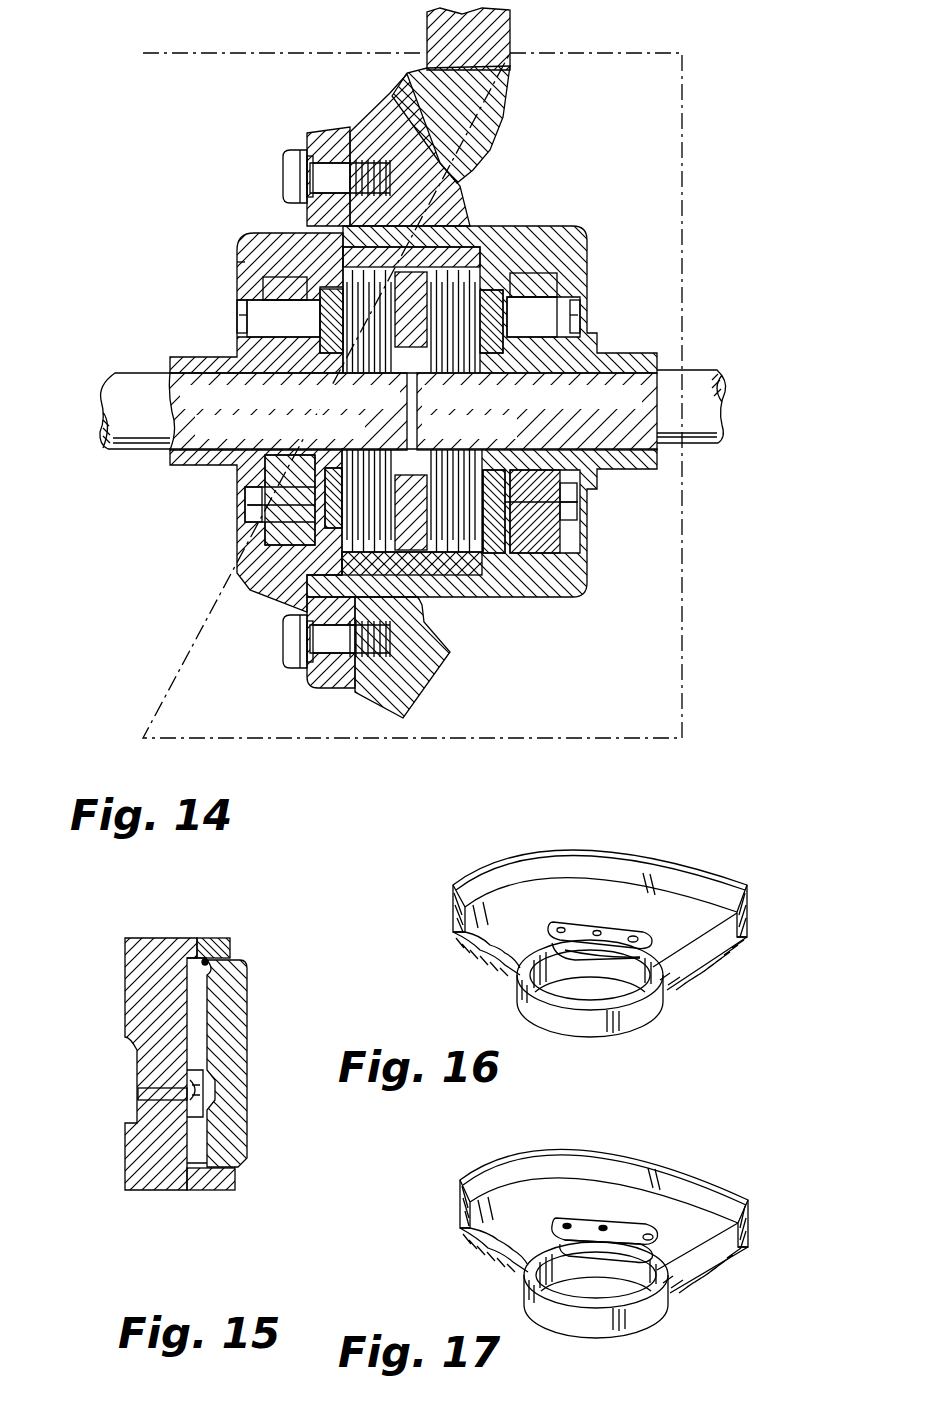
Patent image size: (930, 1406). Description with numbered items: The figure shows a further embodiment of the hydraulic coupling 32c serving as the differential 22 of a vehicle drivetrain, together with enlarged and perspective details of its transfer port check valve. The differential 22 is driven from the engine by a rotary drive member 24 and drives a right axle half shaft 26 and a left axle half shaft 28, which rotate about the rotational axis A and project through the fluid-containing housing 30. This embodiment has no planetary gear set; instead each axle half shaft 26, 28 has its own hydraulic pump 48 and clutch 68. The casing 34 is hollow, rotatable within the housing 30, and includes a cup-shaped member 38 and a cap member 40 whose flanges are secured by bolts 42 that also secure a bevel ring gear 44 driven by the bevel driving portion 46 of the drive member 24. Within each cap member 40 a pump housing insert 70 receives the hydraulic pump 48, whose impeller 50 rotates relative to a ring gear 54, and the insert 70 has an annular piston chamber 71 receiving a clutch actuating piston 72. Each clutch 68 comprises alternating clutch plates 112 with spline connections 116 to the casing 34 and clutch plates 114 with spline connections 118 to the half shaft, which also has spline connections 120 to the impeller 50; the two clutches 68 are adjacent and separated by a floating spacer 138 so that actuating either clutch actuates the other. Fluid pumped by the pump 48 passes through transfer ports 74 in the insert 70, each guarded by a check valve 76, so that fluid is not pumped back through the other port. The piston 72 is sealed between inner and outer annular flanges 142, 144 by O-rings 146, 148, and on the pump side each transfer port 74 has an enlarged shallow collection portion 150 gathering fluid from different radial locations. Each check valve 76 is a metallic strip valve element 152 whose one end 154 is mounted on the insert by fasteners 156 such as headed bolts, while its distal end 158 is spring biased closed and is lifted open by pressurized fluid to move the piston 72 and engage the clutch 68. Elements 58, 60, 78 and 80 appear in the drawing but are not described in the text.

In FIG. 14, the differential 22 is at (138, 70).
In FIG. 14, the rotary drive member 24 is at (428, 36).
In FIG. 14, the right axle half shaft 26 is at (712, 425).
In FIG. 14, the left axle half shaft 28 is at (364, 431).
In FIG. 14, the housing 30 is at (684, 190).
In FIG. 14, the hydraulic coupling 32c is at (244, 588).
In FIG. 14, the casing 34 is at (528, 600).
In FIG. 14, the cup-shaped member 38 is at (565, 600).
In FIG. 14, the cap member 40 is at (413, 391).
In FIG. 14, the bolts 42 is at (292, 160).
In FIG. 14, the ring gear 44 is at (365, 128).
In FIG. 14, the bevel driving portion 46 is at (462, 160).
In FIG. 14, the hydraulic pump 48 is at (265, 288).
In FIG. 14, the pump impeller 50 is at (413, 411).
In FIG. 14, the ring gear 54 is at (242, 255).
In FIG. 14, the snap ring 58 is at (240, 303).
In FIG. 14, the retaining clip 60 is at (243, 330).
In FIG. 14, the clutch 68 is at (480, 602).
In FIG. 14, the pump housing insert 70 is at (315, 268).
In FIG. 15, the pump housing insert 70 is at (167, 936).
In FIG. 16, the pump housing insert 70 is at (478, 860).
In FIG. 17, the pump housing insert 70 is at (507, 1160).
In FIG. 14, the annular piston chamber 71 is at (328, 292).
In FIG. 15, the annular piston chamber 71 is at (197, 988).
In FIG. 14, the clutch actuating piston 72 is at (380, 445).
In FIG. 15, the clutch actuating piston 72 is at (243, 975).
In FIG. 14, the transfer ports 74 is at (318, 318).
In FIG. 15, the transfer ports 74 is at (150, 1094).
In FIG. 16, the transfer ports 74 is at (652, 934).
In FIG. 17, the transfer ports 74 is at (657, 1242).
In FIG. 14, the check valve 76 is at (318, 318).
In FIG. 15, the check valve 76 is at (200, 1078).
In FIG. 16, the check valve 76 is at (633, 918).
In FIG. 17, the check valve 76 is at (615, 1200).
In FIG. 14, the hub flange 78 is at (413, 411).
In FIG. 14, the shaft spline 80 is at (413, 411).
In FIG. 14, the clutch plates 112 is at (432, 372).
In FIG. 14, the clutch plates 114 is at (411, 411).
In FIG. 14, the spline connections 116 is at (410, 250).
In FIG. 14, the spline connections 118 is at (411, 411).
In FIG. 14, the spline connections 120 is at (413, 411).
In FIG. 14, the floating spacer 138 is at (490, 262).
In FIG. 15, the inner annular flange 142 is at (238, 1185).
In FIG. 16, the inner annular flange 142 is at (522, 993).
In FIG. 17, the inner annular flange 142 is at (672, 1298).
In FIG. 15, the outer annular flange 144 is at (222, 940).
In FIG. 16, the outer annular flange 144 is at (523, 872).
In FIG. 17, the outer annular flange 144 is at (748, 1206).
In FIG. 15, the O-ring 146 is at (200, 1180).
In FIG. 15, the O-ring 148 is at (240, 918).
In FIG. 15, the enlarged shallow collection portion 150 is at (128, 1055).
In FIG. 15, the metallic strip valve element 152 is at (197, 1117).
In FIG. 16, the metallic strip valve element 152 is at (603, 965).
In FIG. 17, the metallic strip valve element 152 is at (605, 1262).
In FIG. 16, the one end 154 is at (560, 925).
In FIG. 17, the one end 154 is at (570, 1238).
In FIG. 16, the fasteners 156 is at (602, 945).
In FIG. 17, the fasteners 156 is at (604, 1226).
In FIG. 16, the distal end 158 is at (690, 982).
In FIG. 17, the distal end 158 is at (643, 1222).
In FIG. 14, the rotational axis A is at (370, 422).